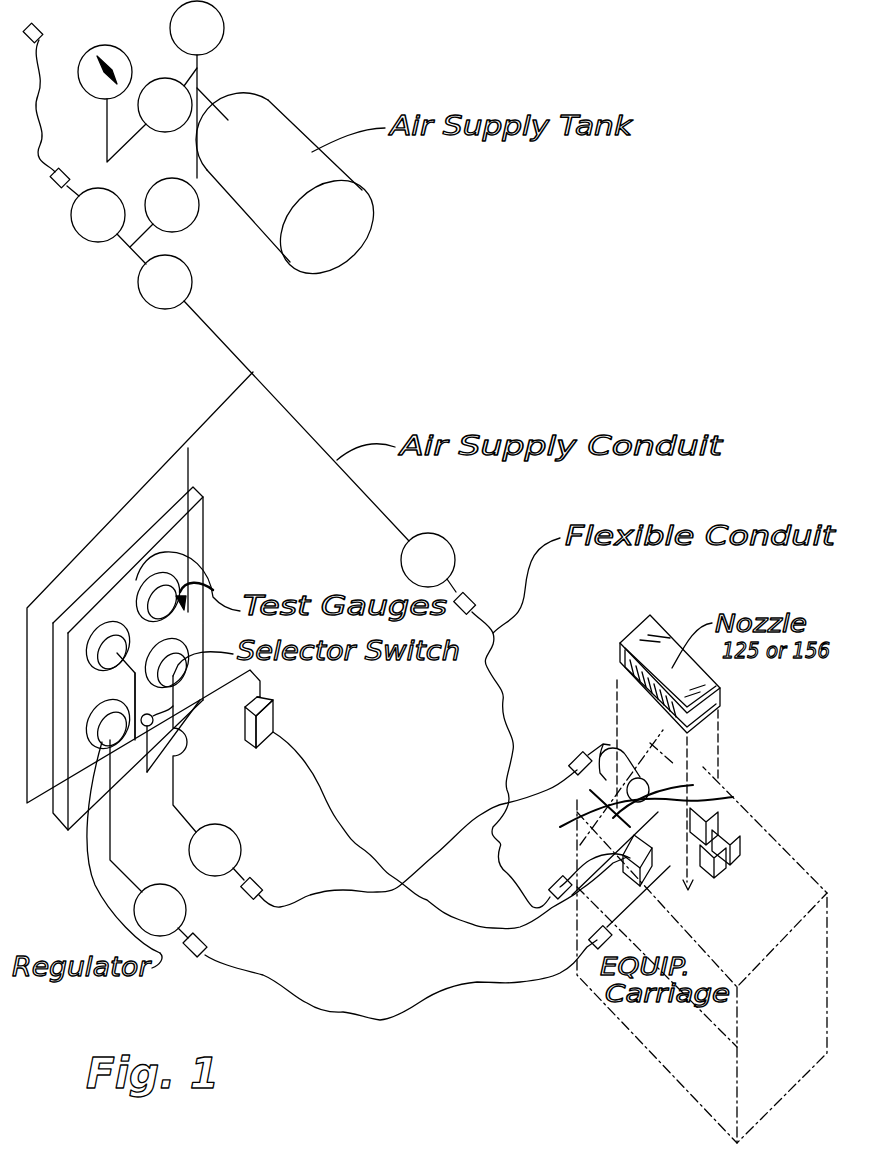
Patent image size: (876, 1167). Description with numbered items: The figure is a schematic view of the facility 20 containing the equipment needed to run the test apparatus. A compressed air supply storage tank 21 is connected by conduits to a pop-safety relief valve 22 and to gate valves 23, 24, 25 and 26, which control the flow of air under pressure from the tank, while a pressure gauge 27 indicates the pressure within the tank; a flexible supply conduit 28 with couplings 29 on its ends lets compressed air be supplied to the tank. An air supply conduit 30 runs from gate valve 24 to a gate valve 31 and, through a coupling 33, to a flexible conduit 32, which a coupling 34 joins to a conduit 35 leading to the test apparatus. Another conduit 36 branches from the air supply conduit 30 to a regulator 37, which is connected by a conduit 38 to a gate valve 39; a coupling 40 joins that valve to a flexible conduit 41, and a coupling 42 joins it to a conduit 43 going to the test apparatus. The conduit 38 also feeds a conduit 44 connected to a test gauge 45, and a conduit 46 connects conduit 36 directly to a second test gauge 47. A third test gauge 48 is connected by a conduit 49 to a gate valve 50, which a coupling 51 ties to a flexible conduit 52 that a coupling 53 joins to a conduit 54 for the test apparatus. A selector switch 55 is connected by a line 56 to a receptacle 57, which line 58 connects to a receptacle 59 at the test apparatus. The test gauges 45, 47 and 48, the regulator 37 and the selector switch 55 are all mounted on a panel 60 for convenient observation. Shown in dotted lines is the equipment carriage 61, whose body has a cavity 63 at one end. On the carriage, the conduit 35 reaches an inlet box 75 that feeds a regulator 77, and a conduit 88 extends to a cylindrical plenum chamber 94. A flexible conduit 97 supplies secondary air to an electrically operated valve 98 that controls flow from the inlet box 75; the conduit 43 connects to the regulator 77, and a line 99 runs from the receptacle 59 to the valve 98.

The facility 20 is at (468, 303).
The compressed air supply storage tank 21 is at (371, 216).
The pop-safety relief valve 22 is at (224, 30).
The gate valve 23 is at (86, 240).
The gate valve 24 is at (153, 308).
The gate valve 25 is at (192, 222).
The gate valve 26 is at (165, 132).
The pressure gauge 27 is at (100, 46).
The flexible supply conduit 28 is at (46, 126).
The couplings 29 is at (40, 27).
The air supply conduit 30 is at (285, 393).
The gate valve 31 is at (446, 542).
The flexible conduit 32 is at (503, 700).
The coupling 33 is at (472, 594).
The coupling 34 is at (551, 885).
The conduit 35 is at (598, 844).
The conduit 36 is at (132, 505).
The regulator 37 is at (119, 822).
The conduit 38 is at (117, 876).
The gate valve 39 is at (186, 912).
The coupling 40 is at (205, 947).
The flexible conduit 41 is at (347, 1010).
The coupling 42 is at (605, 928).
The conduit 43 is at (612, 930).
The conduit 44 is at (135, 685).
The test gauge 45 is at (108, 675).
The conduit 46 is at (190, 469).
The second test gauge 47 is at (158, 596).
The third test gauge 48 is at (167, 662).
The conduit 49 is at (180, 818).
The gate valve 50 is at (238, 840).
The coupling 51 is at (256, 878).
The flexible conduit 52 is at (435, 853).
The coupling 53 is at (571, 766).
The conduit 54 is at (596, 750).
The selector switch 55 is at (153, 732).
The line 56 is at (190, 735).
The receptacle 57 is at (274, 720).
The line 58 is at (325, 786).
The receptacle 59 is at (623, 838).
The panel 60 is at (206, 526).
The equipment carriage 61 is at (702, 936).
The cavity 63 is at (654, 855).
The inlet box 75 is at (646, 782).
The regulator 77 is at (712, 826).
The conduit 88 is at (670, 758).
The cylindrical plenum chamber 94 is at (627, 752).
The flexible conduit 97 is at (599, 802).
The electrically operated valve 98 is at (666, 798).
The line 99 is at (663, 800).